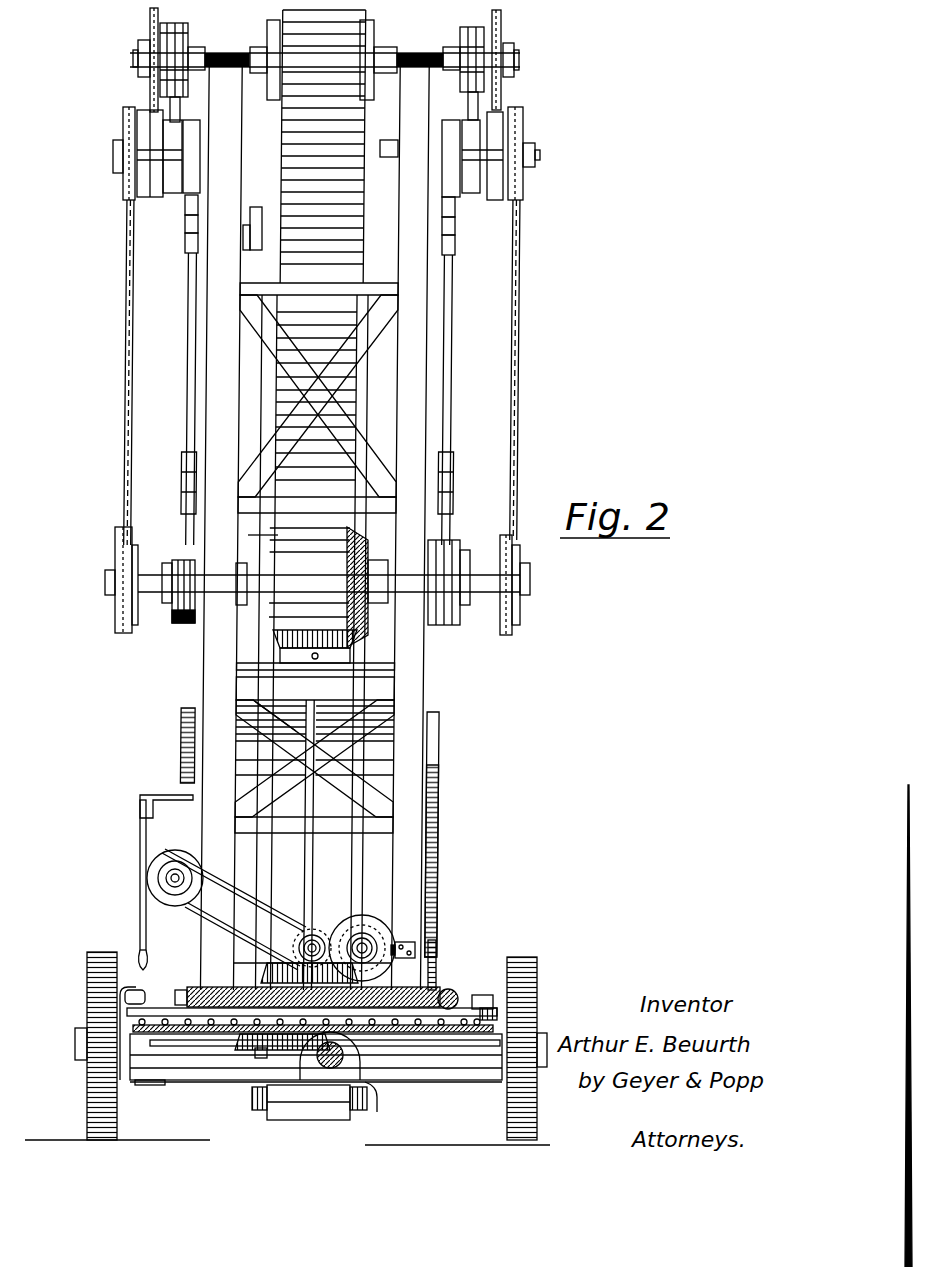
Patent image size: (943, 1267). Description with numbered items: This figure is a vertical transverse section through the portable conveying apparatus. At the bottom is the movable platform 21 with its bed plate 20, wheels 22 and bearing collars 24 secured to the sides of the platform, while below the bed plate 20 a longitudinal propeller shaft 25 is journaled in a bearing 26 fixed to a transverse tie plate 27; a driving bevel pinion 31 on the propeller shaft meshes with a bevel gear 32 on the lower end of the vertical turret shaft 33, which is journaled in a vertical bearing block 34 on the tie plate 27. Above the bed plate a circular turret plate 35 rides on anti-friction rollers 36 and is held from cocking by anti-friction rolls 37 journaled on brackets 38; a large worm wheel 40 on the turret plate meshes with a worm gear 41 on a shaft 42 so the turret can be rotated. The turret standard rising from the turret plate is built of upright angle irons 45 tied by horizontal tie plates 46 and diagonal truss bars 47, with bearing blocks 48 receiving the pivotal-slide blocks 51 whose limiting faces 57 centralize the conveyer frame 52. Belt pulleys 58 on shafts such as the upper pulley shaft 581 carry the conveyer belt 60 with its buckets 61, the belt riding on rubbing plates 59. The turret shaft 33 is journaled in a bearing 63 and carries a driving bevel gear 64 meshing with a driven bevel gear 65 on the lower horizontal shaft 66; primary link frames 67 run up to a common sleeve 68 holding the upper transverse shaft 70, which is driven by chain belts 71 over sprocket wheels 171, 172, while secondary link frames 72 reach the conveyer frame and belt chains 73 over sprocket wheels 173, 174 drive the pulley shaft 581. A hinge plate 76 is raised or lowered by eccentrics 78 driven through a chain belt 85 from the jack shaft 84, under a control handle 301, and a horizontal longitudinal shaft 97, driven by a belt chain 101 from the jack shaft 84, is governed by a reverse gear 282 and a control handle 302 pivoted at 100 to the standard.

The bed plate 20 is at (185, 1048).
The movable platform 21 is at (150, 1086).
The wheels 22 is at (303, 1037).
The bearing collars 24 is at (110, 1040).
The propeller shaft 25 is at (340, 1062).
The bearing 26 is at (372, 1100).
The tie plate 27 is at (400, 1086).
The driving bevel pinion 31 is at (300, 1062).
The bevel gear 32 is at (258, 1058).
The vertical turret shaft 33 is at (306, 801).
The vertical bearing block 34 is at (402, 1054).
The turret plate 35 is at (232, 1052).
The anti-friction rollers or balls 36 is at (240, 1048).
The anti-friction rolls 37 is at (125, 986).
The brackets 38 is at (127, 1011).
The worm wheel 40 is at (186, 992).
The worm gear 41 is at (450, 988).
The shaft 42 is at (476, 997).
The upright angle irons 45 is at (222, 288).
The horizontal tie plates 46 is at (400, 283).
The diagonal truss bars 47 is at (384, 312).
The bearing blocks 48 is at (394, 260).
The pivotal-slide blocks 51 is at (255, 250).
The conveyer frame 52 is at (268, 26).
The limiting faces 57 is at (266, 246).
The belt pulleys 58 is at (325, 35).
The rubbing plates 59 is at (262, 405).
The conveyer belt 60 is at (280, 535).
The buckets 61 is at (317, 392).
The bearing 63 is at (400, 669).
The driving bevel gear 64 is at (300, 640).
The driven bevel gear 65 is at (370, 630).
The lower horizontal shaft 66 is at (166, 592).
The primary link frames 67 is at (449, 365).
The sleeve 68 is at (380, 147).
The upper transverse shaft 70 is at (540, 157).
The chain belts 71 is at (125, 238).
The secondary link frames 72 is at (180, 107).
The belt chains 73 is at (152, 107).
The hinge plate 76 is at (444, 738).
The eccentrics 78 is at (436, 930).
The jack shaft 84 is at (318, 935).
The chain belt 85 is at (363, 915).
The horizontal longitudinal shaft 97 is at (226, 894).
The pivot 100 is at (140, 810).
The belt chain 101 is at (270, 897).
The sprocket wheels 171 is at (115, 545).
The sprocket wheels 172 is at (123, 128).
The sprocket wheels 173 is at (168, 200).
The sprocket wheels 174 is at (150, 20).
The reverse gear 282 is at (150, 893).
The control handle 301 is at (415, 948).
The control handle 302 is at (140, 850).
The upper belt pulley shaft 581 is at (519, 62).